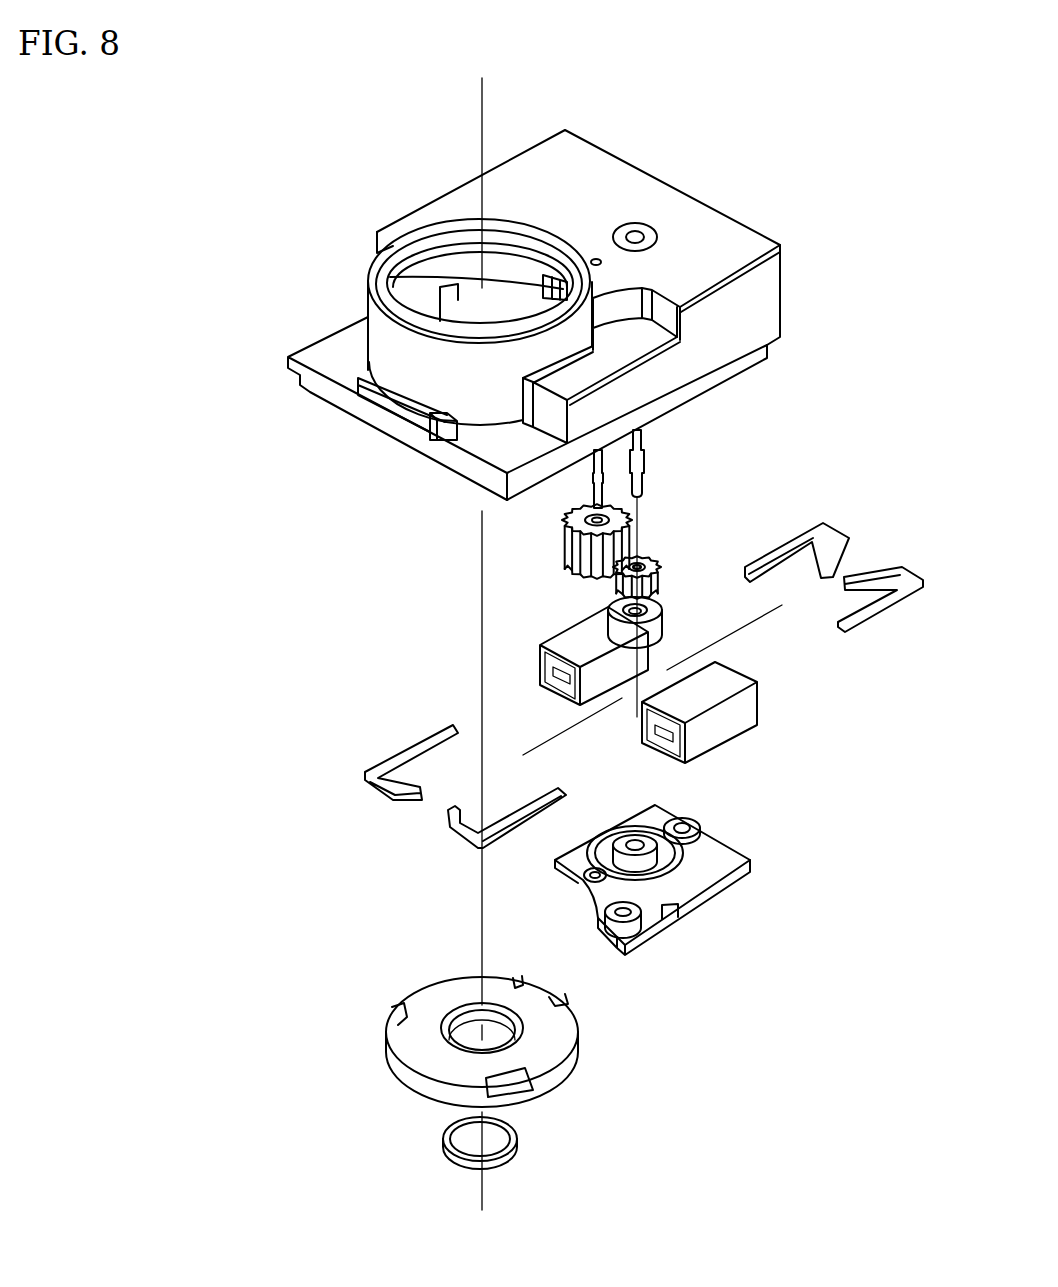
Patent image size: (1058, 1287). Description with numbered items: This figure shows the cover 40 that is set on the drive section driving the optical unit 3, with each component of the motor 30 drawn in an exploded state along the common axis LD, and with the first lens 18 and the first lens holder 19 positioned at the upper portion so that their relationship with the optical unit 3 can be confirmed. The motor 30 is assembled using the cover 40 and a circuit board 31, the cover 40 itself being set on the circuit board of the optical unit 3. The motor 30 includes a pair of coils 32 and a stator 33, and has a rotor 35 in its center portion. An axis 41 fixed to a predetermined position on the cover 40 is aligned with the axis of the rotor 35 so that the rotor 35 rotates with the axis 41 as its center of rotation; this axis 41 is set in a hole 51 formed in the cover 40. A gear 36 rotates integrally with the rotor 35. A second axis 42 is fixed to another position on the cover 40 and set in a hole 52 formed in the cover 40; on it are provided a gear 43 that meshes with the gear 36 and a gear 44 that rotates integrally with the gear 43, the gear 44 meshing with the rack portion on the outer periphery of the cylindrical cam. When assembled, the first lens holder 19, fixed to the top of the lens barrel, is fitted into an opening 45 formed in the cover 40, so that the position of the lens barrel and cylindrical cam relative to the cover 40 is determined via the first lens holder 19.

The optical unit 3 is at (345, 1048).
The lens drive axis LD is at (482, 127).
The first lens 18 is at (517, 1152).
The first lens holder 19 is at (577, 1062).
The motor 30 is at (283, 565).
The circuit board 31 is at (693, 888).
The coils 32 is at (580, 640).
The stator 33 is at (848, 552).
The rotor 35 is at (666, 623).
The gear 36 is at (662, 573).
The cover 40 is at (713, 228).
The axis 41 is at (645, 436).
The axis 42 is at (594, 492).
The gear 43 is at (576, 543).
The gear 44 is at (620, 572).
The opening 45 is at (460, 225).
The hole 51 is at (637, 222).
The hole 52 is at (596, 257).